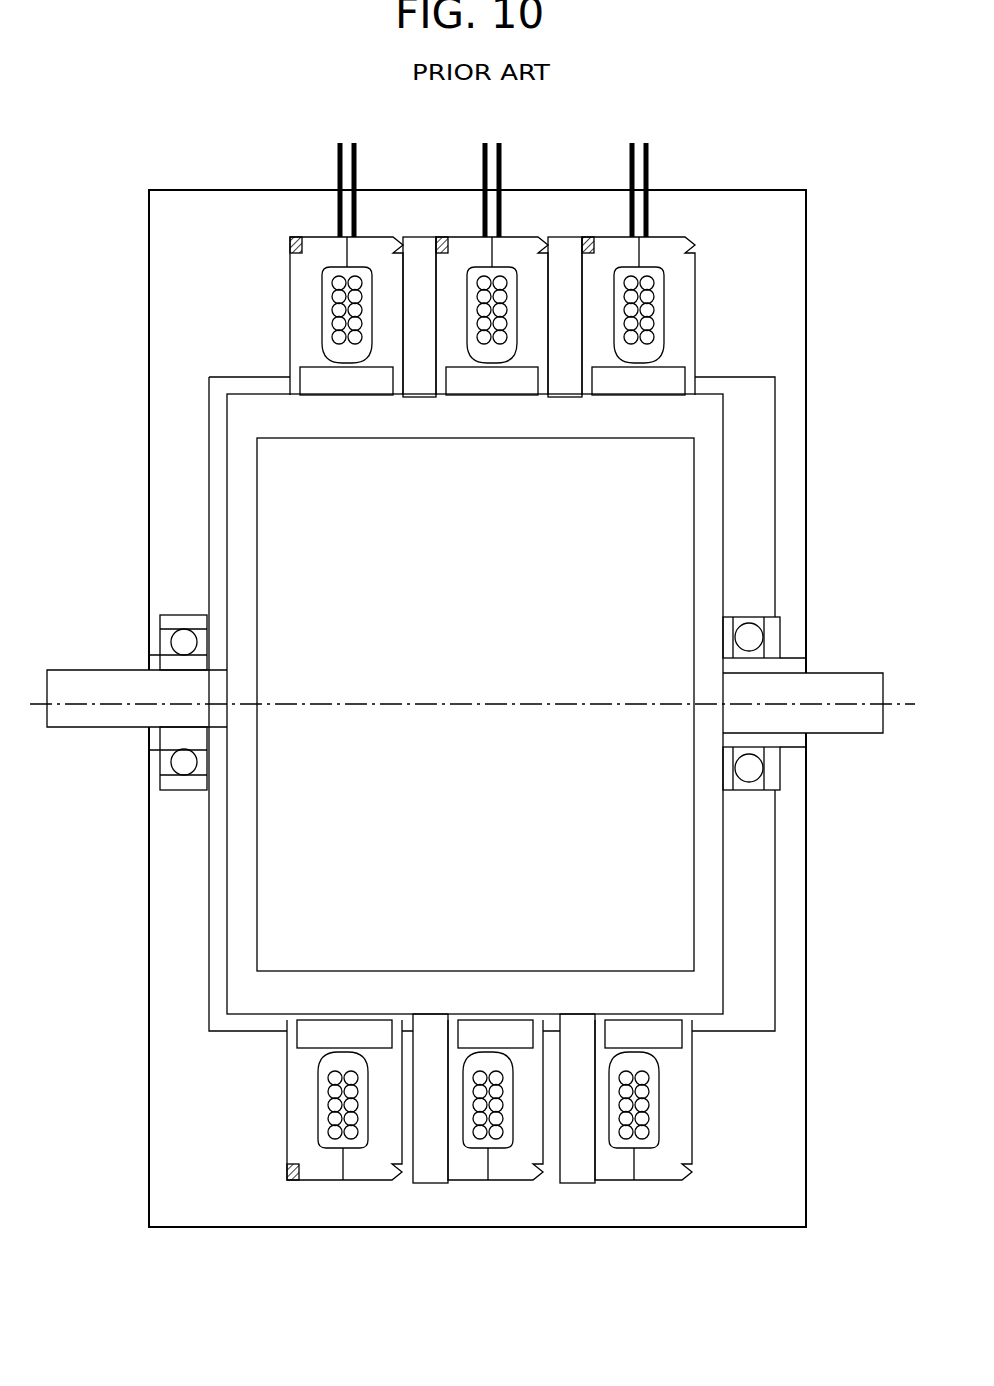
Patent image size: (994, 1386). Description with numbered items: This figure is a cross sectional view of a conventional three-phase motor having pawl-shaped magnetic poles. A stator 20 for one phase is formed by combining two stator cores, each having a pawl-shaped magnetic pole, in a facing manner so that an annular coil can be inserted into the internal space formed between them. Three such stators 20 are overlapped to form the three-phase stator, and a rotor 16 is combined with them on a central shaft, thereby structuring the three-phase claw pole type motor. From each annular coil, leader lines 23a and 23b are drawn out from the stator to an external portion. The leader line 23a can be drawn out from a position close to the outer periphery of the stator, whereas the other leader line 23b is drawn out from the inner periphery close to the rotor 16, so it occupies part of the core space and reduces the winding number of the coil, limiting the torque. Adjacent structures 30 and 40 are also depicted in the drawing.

The rotor 16 is at (277, 415).
The stator 20 is at (595, 237).
The leader line 23a is at (630, 163).
The leader line 23b is at (657, 163).
The insulator 30 is at (465, 237).
The stator core 40 is at (320, 237).